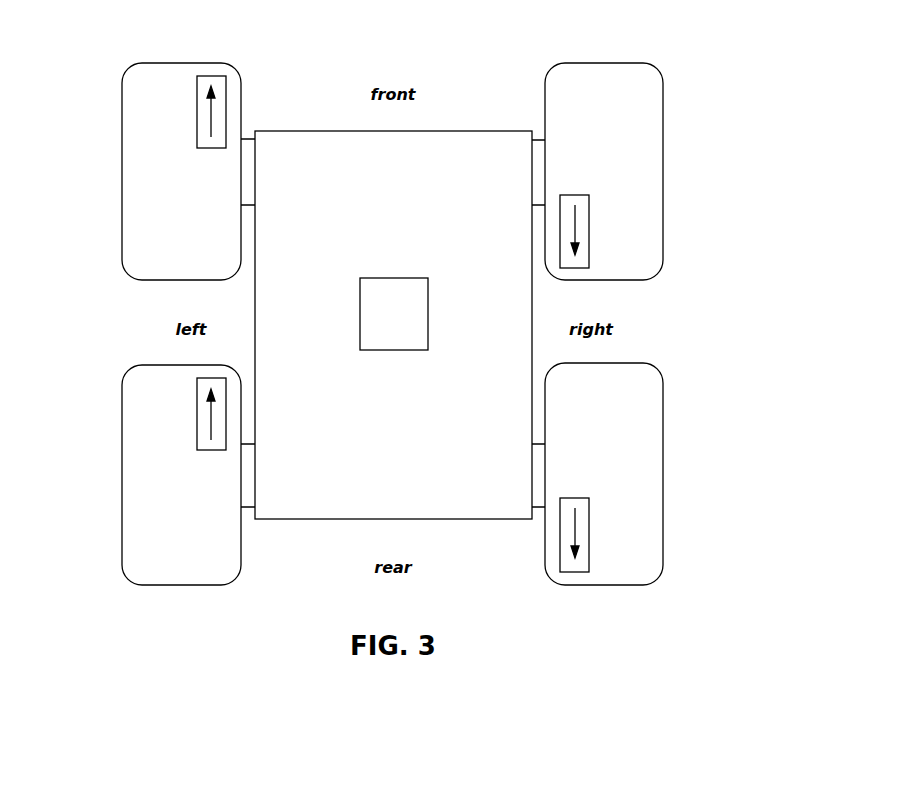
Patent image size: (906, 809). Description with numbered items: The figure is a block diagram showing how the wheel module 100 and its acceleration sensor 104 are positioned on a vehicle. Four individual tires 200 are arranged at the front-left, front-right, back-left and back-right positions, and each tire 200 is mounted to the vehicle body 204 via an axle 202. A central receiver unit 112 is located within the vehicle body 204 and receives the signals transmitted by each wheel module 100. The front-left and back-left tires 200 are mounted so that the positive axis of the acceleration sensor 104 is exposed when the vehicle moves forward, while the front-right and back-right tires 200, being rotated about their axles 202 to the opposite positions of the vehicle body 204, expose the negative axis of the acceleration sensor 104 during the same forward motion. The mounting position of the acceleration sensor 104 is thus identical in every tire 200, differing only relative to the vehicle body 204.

The wheel module 100 is at (197, 82).
The acceleration sensor 104 is at (210, 122).
The central receiver unit 112 is at (394, 314).
The tire 200 is at (392, 324).
The axle 202 is at (247, 194).
The vehicle body 204 is at (420, 137).